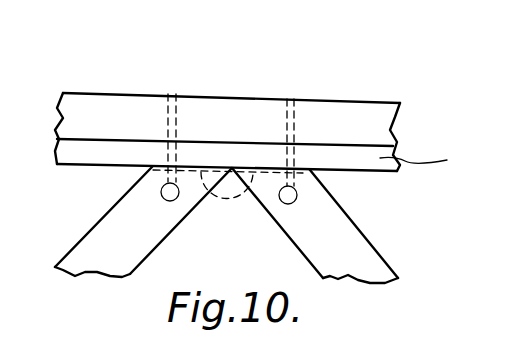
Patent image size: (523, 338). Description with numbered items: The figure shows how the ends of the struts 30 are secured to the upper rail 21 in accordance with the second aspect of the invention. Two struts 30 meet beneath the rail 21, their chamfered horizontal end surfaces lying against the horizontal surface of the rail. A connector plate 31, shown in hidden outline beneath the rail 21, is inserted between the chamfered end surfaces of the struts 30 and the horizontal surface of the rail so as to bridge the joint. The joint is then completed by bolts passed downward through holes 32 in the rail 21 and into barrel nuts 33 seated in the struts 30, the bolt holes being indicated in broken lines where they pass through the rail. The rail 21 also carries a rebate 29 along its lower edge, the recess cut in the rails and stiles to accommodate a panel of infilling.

The upper rail 21 is at (82, 98).
The rebate 29 is at (426, 160).
The struts 30 is at (95, 262).
The connector plates 31 is at (228, 196).
The holes 32 is at (173, 93).
The barrel nuts 33 is at (281, 202).